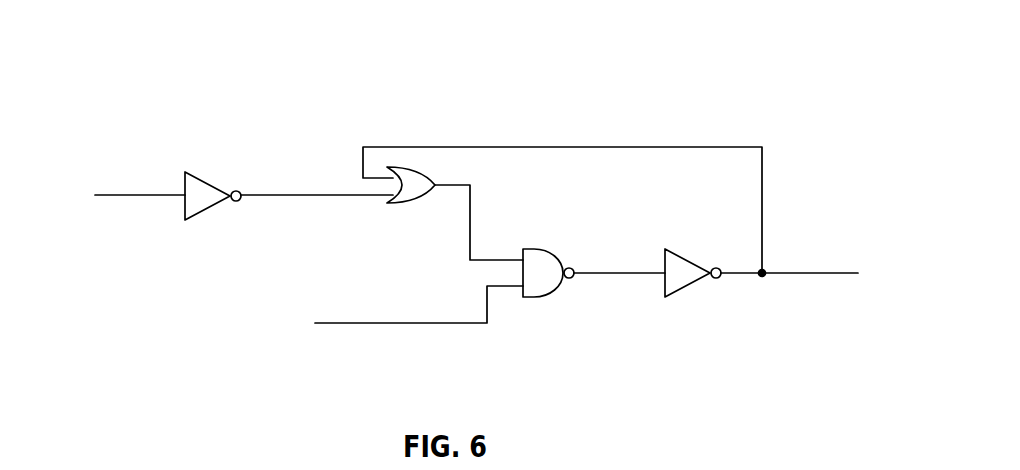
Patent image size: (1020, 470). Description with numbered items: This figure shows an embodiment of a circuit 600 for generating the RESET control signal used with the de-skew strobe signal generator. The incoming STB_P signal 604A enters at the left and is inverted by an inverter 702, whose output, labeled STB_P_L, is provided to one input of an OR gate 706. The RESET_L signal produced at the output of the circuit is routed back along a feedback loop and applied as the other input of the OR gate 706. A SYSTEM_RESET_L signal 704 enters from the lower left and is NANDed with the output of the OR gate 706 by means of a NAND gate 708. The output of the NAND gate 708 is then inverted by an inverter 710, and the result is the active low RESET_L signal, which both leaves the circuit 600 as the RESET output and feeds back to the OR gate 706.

The circuit 600 is at (762, 88).
The STB_P signal 604A is at (137, 195).
The inverter 702 is at (210, 180).
The SYSTEM_RESET_L signal 704 is at (457, 323).
The OR gate 706 is at (395, 205).
The NAND gate 708 is at (545, 255).
The inverter 710 is at (688, 287).